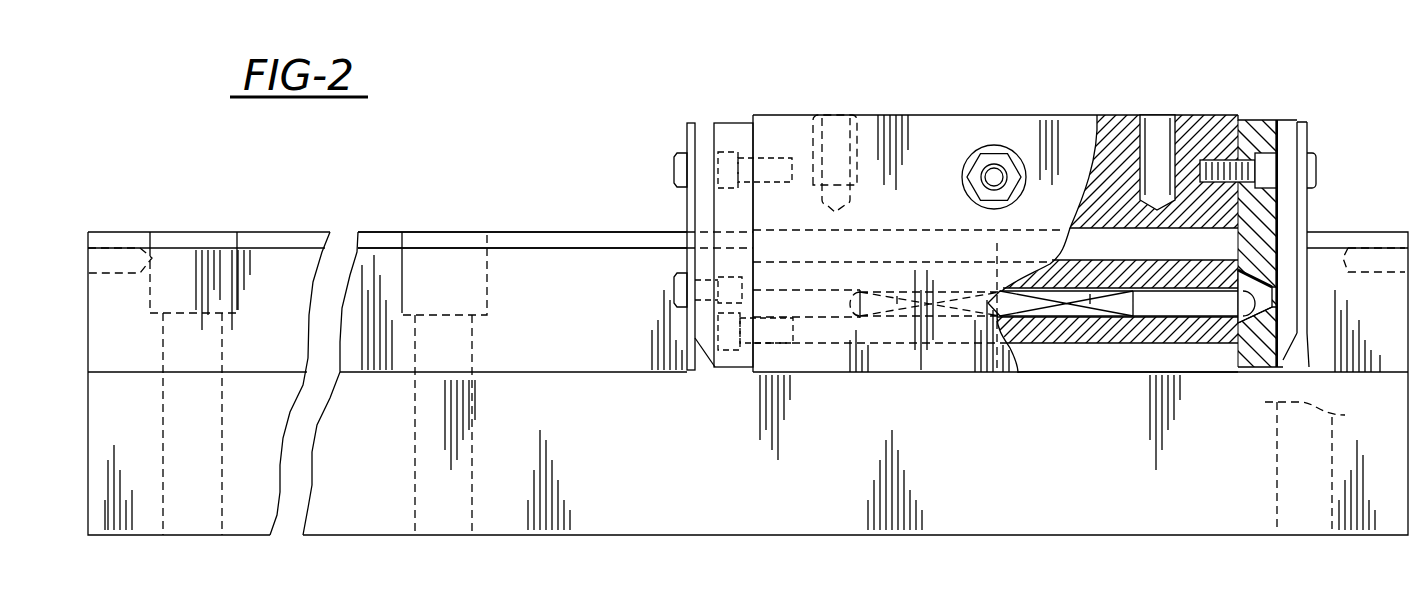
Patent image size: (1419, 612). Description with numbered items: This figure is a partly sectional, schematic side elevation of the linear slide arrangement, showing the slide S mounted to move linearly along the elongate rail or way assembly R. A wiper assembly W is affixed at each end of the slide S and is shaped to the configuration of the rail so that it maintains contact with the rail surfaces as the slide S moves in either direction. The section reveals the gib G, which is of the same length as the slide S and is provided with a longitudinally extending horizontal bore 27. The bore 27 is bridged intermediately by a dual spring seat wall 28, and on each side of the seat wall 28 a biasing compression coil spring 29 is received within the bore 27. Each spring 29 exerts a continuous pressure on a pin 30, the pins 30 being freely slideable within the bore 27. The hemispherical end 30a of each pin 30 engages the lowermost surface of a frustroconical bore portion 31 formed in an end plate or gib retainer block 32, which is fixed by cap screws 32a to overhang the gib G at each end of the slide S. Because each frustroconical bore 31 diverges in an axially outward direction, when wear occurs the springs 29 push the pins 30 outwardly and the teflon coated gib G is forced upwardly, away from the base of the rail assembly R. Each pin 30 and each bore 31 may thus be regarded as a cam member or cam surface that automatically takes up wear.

The horizontal bore 27 is at (810, 340).
The dual spring seat wall 28 is at (997, 370).
The biasing compression coil spring 29 is at (897, 300).
The pin 30 is at (855, 315).
The hemispherical end 30a is at (1275, 295).
The frustroconical bore portion 31 is at (1248, 273).
The end plate 32 is at (747, 367).
The cap screw 32a is at (1263, 167).
The gib G is at (1215, 343).
The rail assembly R is at (532, 268).
The slide S is at (1055, 100).
The wiper assembly W is at (687, 333).